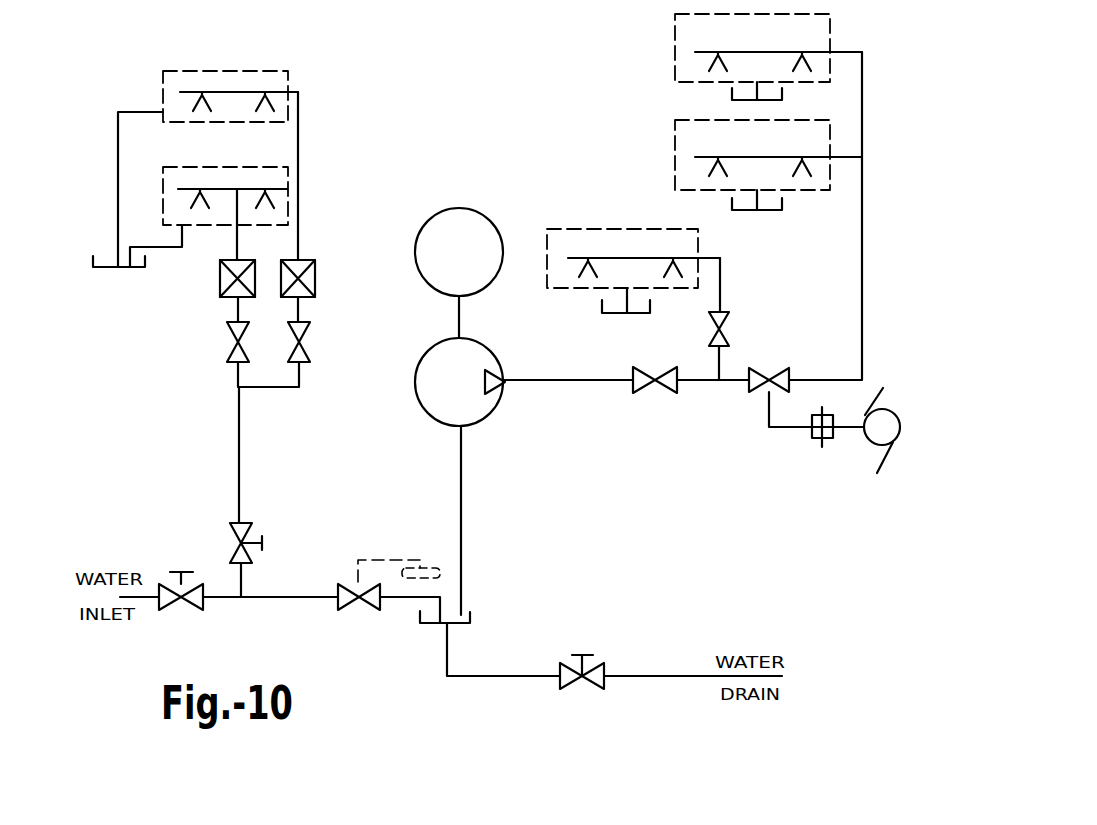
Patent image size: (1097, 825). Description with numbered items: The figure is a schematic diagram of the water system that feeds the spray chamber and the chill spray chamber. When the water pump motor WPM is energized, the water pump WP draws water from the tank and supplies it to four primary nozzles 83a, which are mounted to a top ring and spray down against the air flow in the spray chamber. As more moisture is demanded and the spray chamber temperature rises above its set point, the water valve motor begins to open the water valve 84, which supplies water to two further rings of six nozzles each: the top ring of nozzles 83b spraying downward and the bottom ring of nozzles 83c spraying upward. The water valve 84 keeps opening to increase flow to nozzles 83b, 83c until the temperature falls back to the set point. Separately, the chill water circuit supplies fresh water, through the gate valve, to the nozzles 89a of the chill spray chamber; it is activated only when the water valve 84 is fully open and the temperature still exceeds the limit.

The nozzles of the chill spray chamber 89a is at (283, 75).
The primary nozzles 83a is at (618, 227).
The top ring of nozzles 83b is at (678, 37).
The bottom ring of nozzles 83c is at (688, 136).
The water valve 84 is at (778, 370).
The water pump motor WPM is at (459, 236).
The water pump WP is at (498, 364).